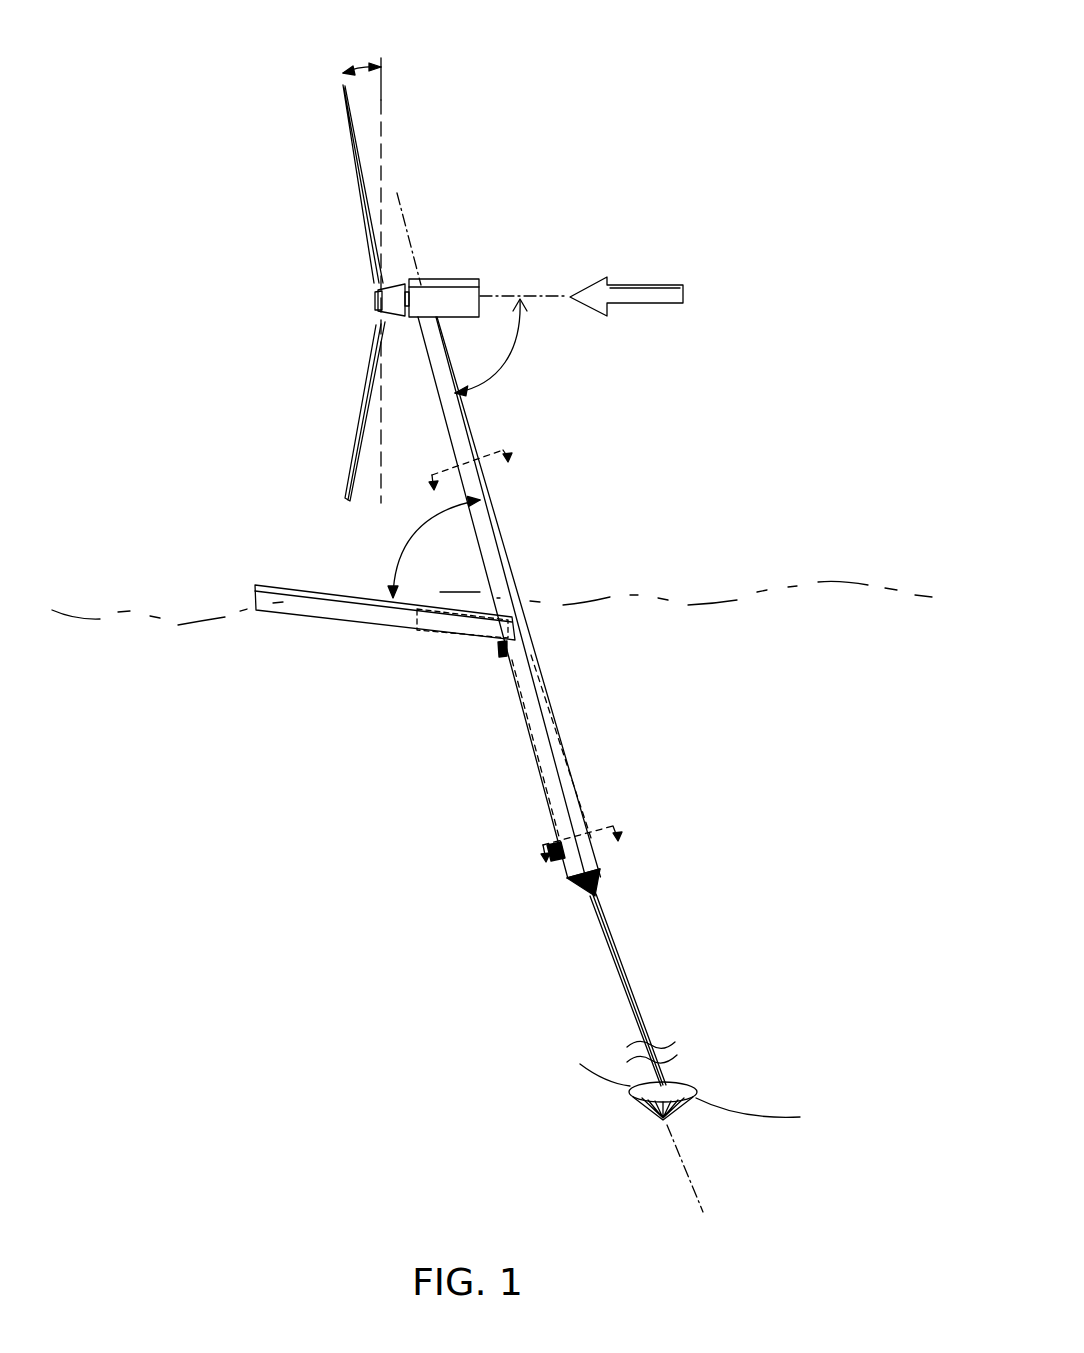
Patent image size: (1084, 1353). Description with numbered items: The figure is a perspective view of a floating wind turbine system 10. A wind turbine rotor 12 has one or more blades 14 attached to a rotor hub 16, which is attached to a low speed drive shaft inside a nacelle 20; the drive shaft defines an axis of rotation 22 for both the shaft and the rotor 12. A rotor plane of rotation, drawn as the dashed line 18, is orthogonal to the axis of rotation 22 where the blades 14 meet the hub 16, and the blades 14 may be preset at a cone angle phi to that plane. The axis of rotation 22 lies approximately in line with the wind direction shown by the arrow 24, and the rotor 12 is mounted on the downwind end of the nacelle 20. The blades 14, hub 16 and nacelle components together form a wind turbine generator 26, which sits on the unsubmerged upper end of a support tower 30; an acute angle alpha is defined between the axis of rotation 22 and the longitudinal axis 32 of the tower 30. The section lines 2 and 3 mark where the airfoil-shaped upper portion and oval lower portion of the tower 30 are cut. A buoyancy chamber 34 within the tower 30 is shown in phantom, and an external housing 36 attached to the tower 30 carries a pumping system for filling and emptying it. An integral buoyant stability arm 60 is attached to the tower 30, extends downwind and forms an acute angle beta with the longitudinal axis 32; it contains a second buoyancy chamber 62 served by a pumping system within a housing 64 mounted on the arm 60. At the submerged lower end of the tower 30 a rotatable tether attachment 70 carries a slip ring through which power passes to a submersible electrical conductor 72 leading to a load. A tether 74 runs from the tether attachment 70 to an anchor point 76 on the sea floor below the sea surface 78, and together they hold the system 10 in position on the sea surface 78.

The wind turbine system 10 is at (595, 147).
The wind turbine rotor 12 is at (288, 272).
The blades 14 is at (356, 160).
The rotor hub 16 is at (393, 318).
The rotor plane of rotation 18 is at (382, 97).
The nacelle 20 is at (476, 279).
The axis of rotation 22 is at (543, 296).
The wind direction arrow 24 is at (672, 305).
The wind turbine generator 26 is at (478, 173).
The support tower 30 is at (508, 578).
The longitudinal axis 32 is at (402, 205).
The buoyancy chamber 34 is at (535, 705).
The housing 36 is at (558, 856).
The buoyant stability arm 60 is at (307, 610).
The buoyancy chamber 62 is at (413, 617).
The pumping system housing 64 is at (500, 653).
The rotatable tether attachment 70 is at (605, 877).
The submersible electrical conductor 72 is at (637, 972).
The tether 74 is at (617, 970).
The anchor point 76 is at (671, 1072).
The sea surface 78 is at (817, 578).
The section line 2- 2 is at (462, 452).
The section line 3- 3 is at (572, 823).